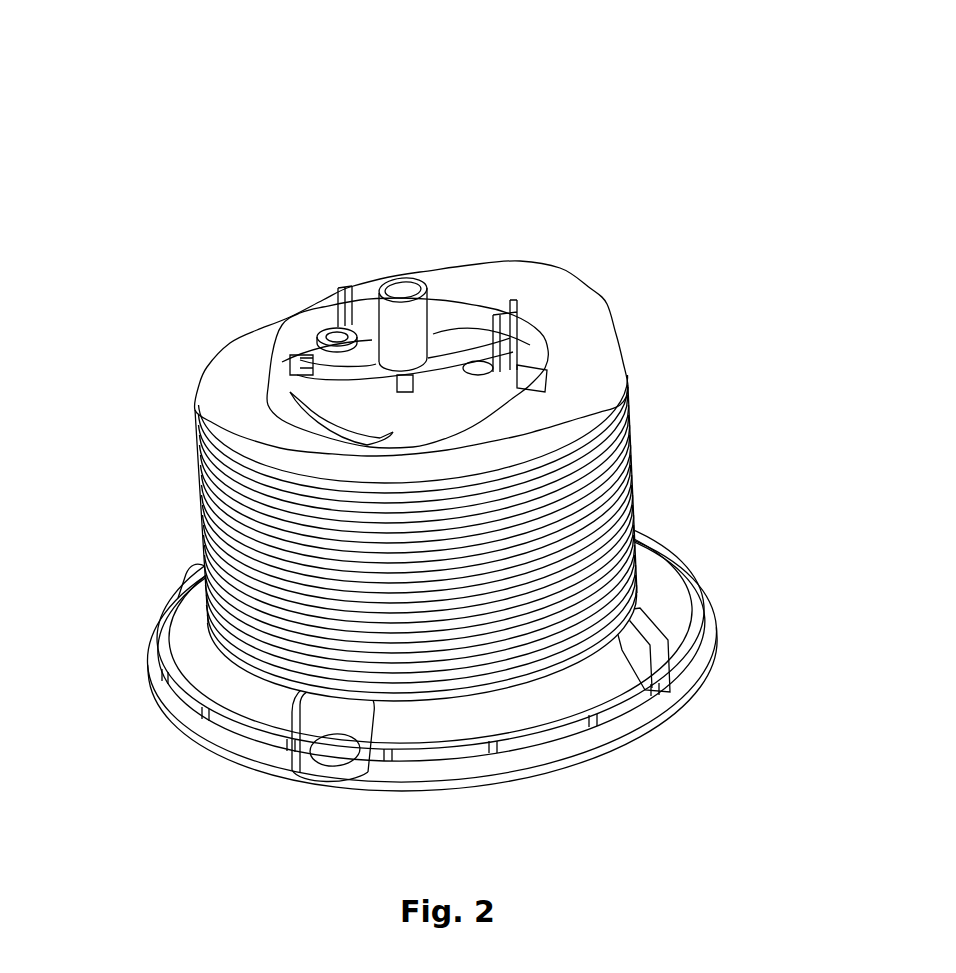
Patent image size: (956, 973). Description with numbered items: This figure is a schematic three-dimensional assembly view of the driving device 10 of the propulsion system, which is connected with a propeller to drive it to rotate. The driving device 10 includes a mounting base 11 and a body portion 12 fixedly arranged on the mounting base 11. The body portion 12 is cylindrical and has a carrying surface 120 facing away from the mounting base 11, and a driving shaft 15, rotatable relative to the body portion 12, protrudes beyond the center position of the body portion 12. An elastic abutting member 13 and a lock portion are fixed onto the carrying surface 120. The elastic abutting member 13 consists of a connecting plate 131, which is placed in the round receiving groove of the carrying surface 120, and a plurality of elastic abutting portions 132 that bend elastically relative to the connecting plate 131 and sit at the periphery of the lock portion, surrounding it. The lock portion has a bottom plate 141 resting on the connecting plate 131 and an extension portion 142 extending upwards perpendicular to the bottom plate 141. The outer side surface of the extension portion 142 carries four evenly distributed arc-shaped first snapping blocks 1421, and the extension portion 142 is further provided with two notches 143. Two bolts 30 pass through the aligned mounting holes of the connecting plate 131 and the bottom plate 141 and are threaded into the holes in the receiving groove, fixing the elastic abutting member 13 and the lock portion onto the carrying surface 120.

The driving device 10 is at (451, 411).
The mounting base 11 is at (583, 690).
The body portion 12 is at (645, 525).
The elastic abutting member 13 is at (527, 408).
The connecting plate 131 is at (600, 350).
The elastic abutting portions 132 is at (548, 368).
The carrying surface 120 is at (240, 375).
The bottom plate 141 is at (452, 332).
The extension portion 142 is at (350, 387).
The first snapping blocks 1421 is at (540, 398).
The notches 143 is at (500, 337).
The driving shaft 15 is at (395, 287).
The bolts 30 is at (327, 317).